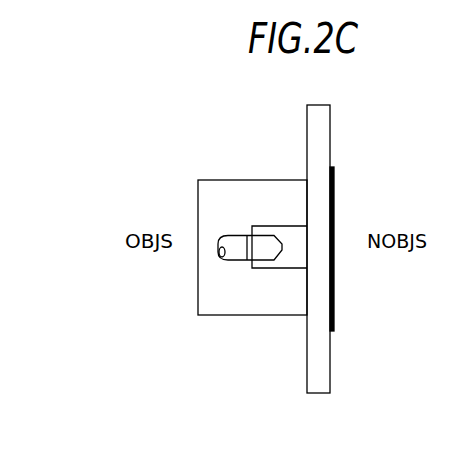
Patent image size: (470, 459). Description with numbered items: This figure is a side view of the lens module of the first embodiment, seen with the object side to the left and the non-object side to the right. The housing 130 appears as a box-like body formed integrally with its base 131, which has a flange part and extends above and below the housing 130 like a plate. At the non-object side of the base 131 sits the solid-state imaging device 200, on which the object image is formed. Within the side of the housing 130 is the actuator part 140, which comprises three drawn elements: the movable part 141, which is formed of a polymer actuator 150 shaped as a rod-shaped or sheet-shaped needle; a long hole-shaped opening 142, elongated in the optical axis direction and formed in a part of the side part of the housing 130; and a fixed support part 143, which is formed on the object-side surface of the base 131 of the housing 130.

The housing 130 is at (222, 177).
The base 131 is at (317, 122).
The solid-state imaging device 200 is at (335, 181).
The actuator part 140 is at (257, 417).
The movable part 141 is at (236, 250).
The polymer actuator 150 is at (250, 248).
The long hole-shaped opening 142 is at (221, 257).
The fixed support part 143 is at (280, 262).